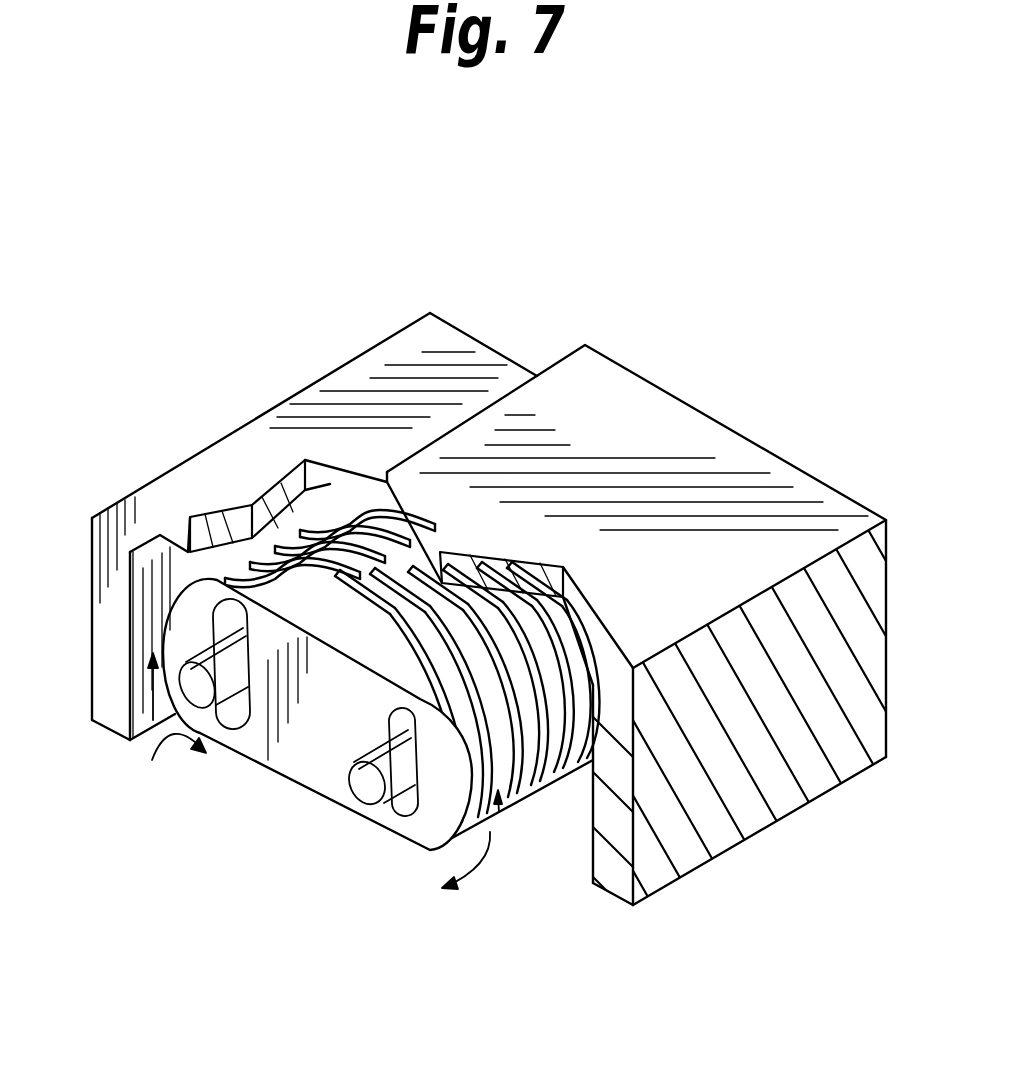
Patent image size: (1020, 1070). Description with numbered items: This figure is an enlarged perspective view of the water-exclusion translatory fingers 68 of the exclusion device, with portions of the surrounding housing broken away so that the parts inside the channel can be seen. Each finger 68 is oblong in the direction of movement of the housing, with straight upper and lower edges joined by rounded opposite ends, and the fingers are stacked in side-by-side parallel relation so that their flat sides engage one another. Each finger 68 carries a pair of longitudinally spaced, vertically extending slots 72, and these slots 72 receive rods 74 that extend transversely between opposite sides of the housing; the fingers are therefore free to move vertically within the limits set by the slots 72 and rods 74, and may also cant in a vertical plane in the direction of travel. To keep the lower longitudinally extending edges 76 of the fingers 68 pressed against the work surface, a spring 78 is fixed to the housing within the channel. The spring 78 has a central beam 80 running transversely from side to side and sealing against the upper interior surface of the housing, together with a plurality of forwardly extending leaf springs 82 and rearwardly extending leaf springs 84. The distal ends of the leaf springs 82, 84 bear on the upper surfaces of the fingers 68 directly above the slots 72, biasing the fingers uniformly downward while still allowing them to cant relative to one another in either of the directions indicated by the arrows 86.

The translatory finger 68 is at (293, 760).
The vertically extending slot 72 is at (247, 628).
The rod 74 is at (390, 780).
The lower longitudinally extending edge 76 is at (307, 793).
The spring 78 is at (305, 460).
The central beam 80 is at (396, 557).
The forwardly extending leaf spring 82 is at (190, 515).
The rearwardly extending leaf spring 84 is at (520, 790).
The arrow 86 is at (152, 760).